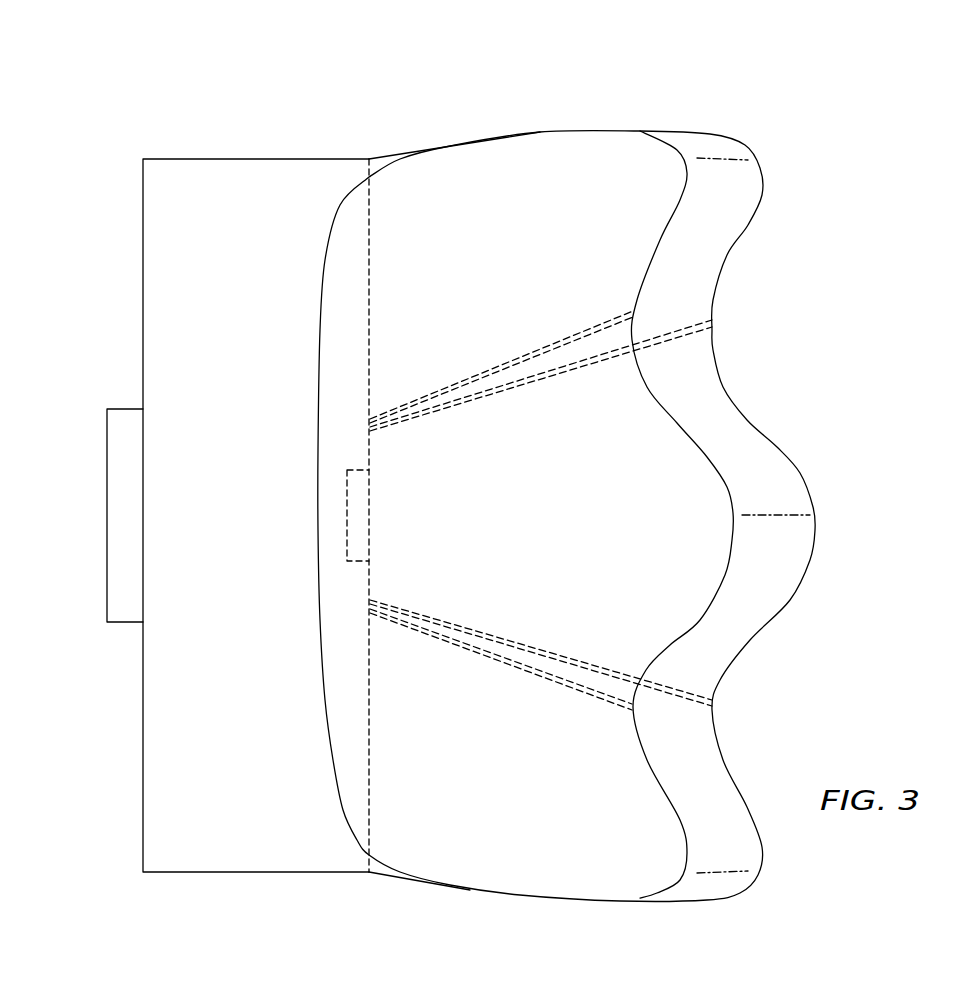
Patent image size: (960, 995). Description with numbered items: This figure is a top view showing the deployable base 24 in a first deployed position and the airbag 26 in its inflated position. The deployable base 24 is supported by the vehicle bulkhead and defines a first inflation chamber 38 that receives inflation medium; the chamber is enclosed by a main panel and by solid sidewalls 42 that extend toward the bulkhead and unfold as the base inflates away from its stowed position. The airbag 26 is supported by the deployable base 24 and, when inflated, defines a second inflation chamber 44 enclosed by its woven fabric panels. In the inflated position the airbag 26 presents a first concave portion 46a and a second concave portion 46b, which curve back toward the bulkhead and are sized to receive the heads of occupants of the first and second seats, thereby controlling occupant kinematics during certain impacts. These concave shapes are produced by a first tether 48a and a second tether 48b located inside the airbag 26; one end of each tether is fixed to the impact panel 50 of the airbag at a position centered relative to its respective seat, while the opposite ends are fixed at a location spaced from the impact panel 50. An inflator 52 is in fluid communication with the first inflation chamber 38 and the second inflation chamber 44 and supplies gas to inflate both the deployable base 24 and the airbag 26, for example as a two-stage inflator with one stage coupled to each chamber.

The deployable base 24 is at (165, 265).
The airbag 26 is at (537, 132).
The first inflation chamber 38 is at (180, 184).
The sidewalls 42 is at (240, 159).
The second inflation chamber 44 is at (575, 181).
The first concave portion 46a is at (692, 728).
The second concave portion 46b is at (692, 303).
The first tether 48a is at (520, 645).
The second tether 48b is at (537, 356).
The impact panel 50 is at (762, 467).
The inflator 52 is at (105, 455).